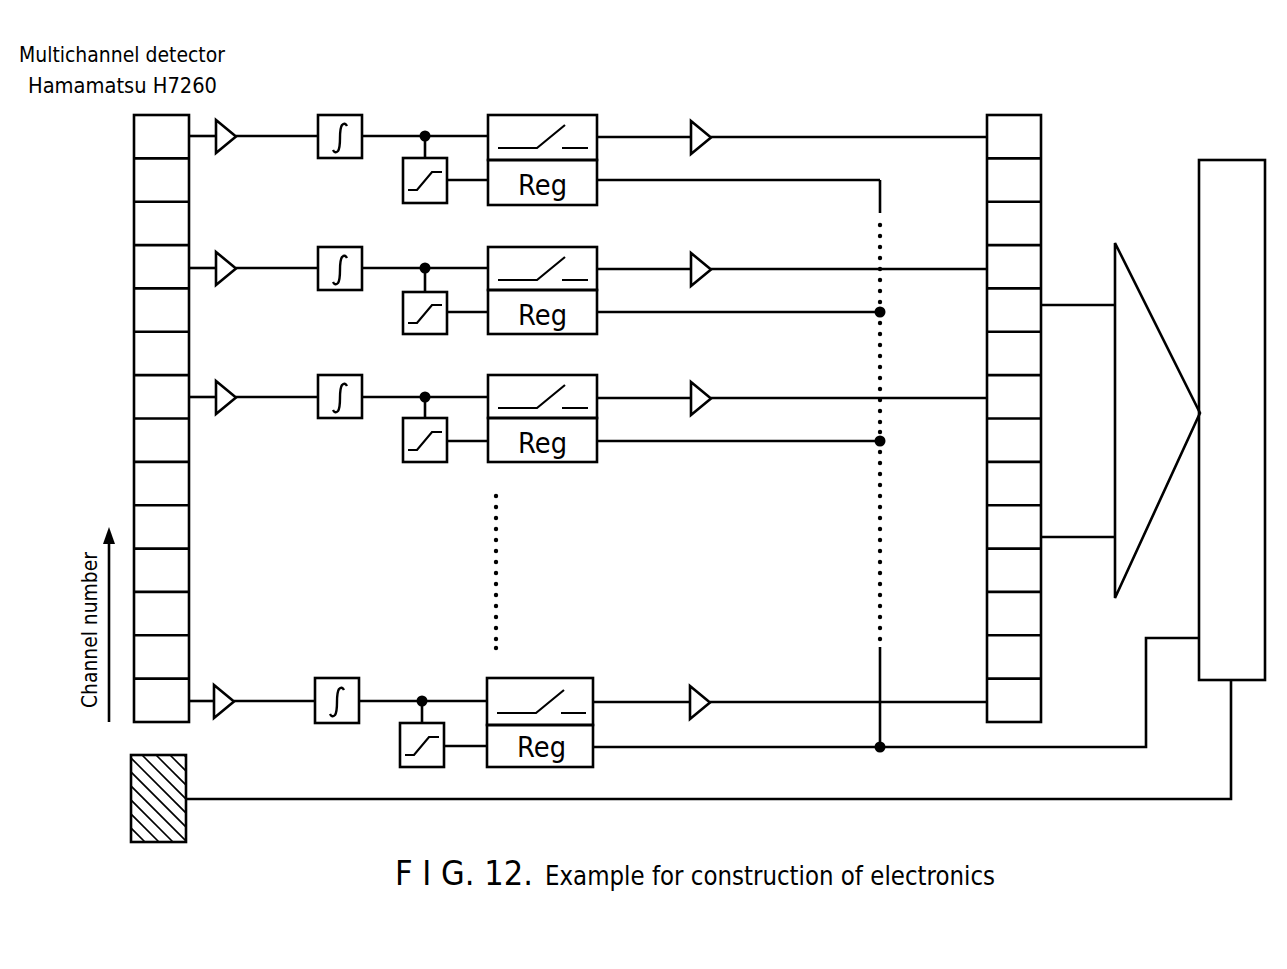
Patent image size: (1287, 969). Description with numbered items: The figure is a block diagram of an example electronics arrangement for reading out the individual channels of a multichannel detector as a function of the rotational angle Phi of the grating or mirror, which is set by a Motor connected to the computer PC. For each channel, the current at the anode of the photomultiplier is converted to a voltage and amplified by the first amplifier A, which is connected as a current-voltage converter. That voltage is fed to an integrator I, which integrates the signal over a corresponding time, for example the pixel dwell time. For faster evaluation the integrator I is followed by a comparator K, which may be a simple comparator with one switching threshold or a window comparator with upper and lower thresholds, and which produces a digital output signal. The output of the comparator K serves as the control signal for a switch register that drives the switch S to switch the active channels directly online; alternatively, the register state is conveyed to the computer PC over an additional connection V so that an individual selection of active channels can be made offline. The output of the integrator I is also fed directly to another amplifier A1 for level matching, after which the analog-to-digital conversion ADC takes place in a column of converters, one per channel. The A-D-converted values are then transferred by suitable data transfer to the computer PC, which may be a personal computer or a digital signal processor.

The first amplifier A is at (212, 153).
The integrator I is at (340, 154).
The comparator K is at (425, 198).
The switch S is at (542, 120).
The another amplifier A1 is at (696, 123).
The analog-to-digital conversion ADC is at (1014, 418).
The additional connection V is at (896, 693).
The computer PC is at (1232, 405).
The rotational angle phi Phi is at (728, 739).
The motor Motor is at (157, 798).